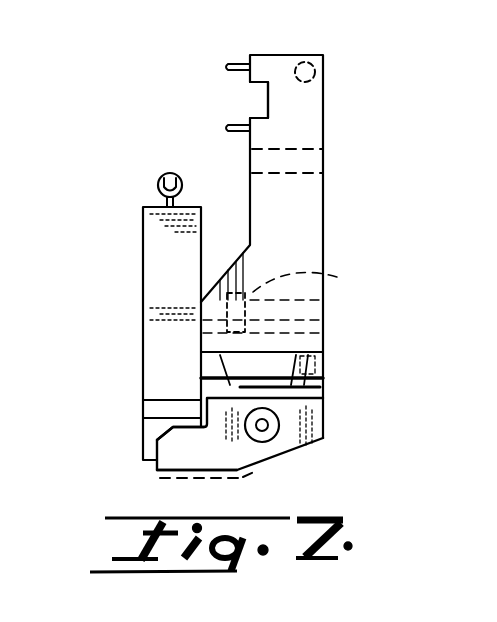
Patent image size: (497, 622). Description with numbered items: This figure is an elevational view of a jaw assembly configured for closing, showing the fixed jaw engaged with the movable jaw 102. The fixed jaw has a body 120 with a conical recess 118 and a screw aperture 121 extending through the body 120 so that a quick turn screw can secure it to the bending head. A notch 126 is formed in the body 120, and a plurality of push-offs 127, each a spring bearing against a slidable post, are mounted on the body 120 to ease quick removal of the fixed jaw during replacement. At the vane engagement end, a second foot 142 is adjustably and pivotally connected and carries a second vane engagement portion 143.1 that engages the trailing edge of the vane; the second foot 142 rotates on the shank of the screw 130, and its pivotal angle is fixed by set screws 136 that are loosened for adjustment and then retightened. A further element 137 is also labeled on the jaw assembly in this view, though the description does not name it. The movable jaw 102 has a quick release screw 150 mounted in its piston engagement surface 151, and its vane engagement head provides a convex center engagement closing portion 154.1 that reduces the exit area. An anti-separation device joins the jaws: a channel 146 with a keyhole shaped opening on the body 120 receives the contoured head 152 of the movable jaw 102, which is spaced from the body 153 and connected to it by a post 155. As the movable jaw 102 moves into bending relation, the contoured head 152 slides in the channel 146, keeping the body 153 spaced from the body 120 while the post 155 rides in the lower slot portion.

The movable jaw 102 is at (158, 320).
The conical recess 118 is at (314, 70).
The body 120 is at (310, 218).
The screw aperture 121 is at (328, 153).
The notch 126 is at (256, 88).
The push-offs 127 is at (238, 63).
The screw 130 is at (280, 420).
The set screws 136 is at (323, 370).
The lever 137 is at (235, 384).
The second foot 142 is at (218, 458).
The second vane engagement portion 143.1 is at (168, 427).
The channel 146 is at (323, 335).
The quick release screw 150 is at (158, 182).
The piston engagement surface 151 is at (152, 200).
The contoured head 152 is at (319, 278).
The body 153 is at (158, 262).
The center engagement closing portion 154.1 is at (148, 465).
The post 155 is at (335, 318).